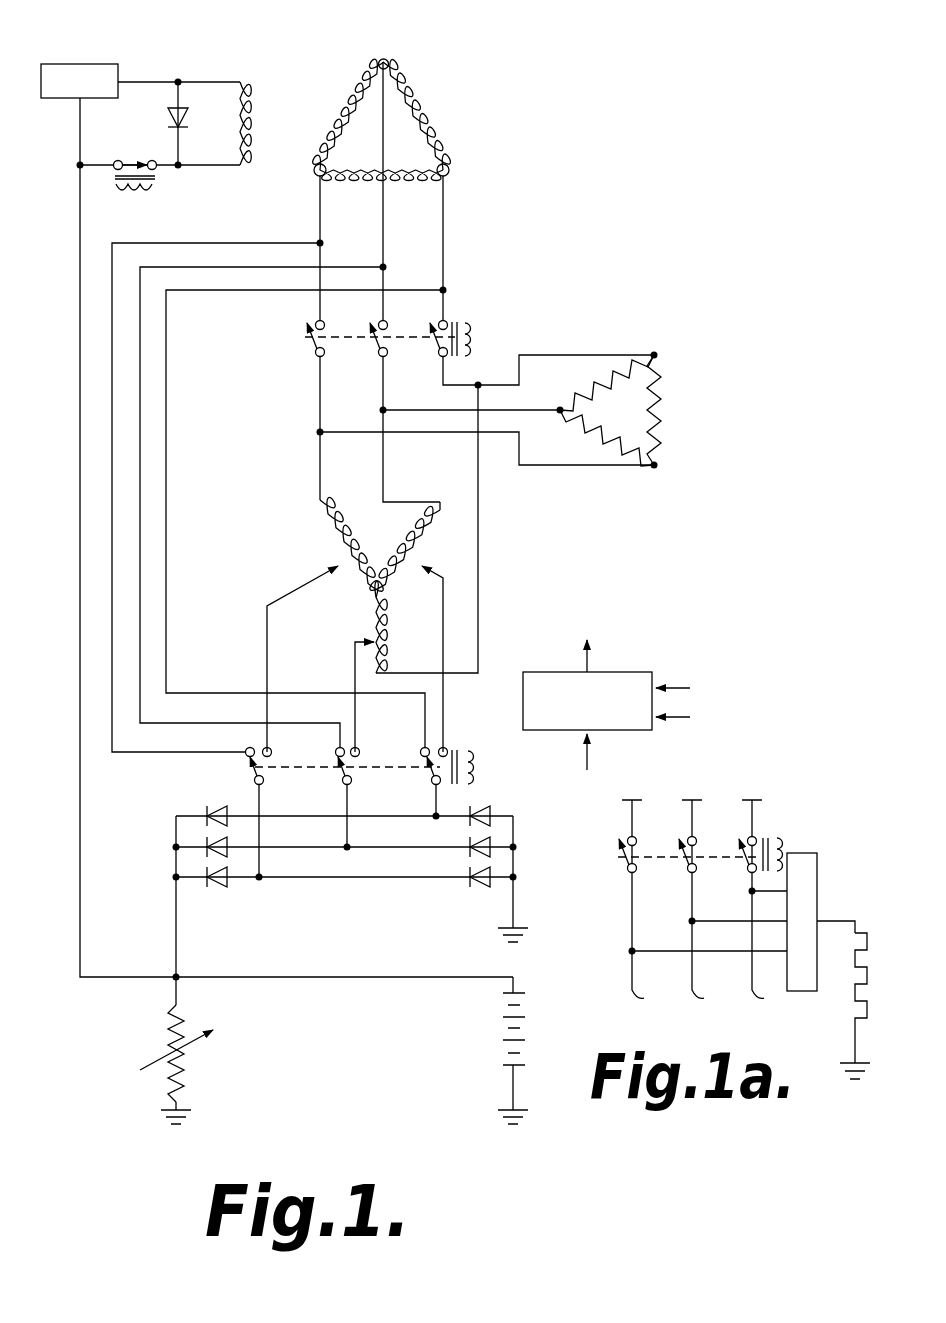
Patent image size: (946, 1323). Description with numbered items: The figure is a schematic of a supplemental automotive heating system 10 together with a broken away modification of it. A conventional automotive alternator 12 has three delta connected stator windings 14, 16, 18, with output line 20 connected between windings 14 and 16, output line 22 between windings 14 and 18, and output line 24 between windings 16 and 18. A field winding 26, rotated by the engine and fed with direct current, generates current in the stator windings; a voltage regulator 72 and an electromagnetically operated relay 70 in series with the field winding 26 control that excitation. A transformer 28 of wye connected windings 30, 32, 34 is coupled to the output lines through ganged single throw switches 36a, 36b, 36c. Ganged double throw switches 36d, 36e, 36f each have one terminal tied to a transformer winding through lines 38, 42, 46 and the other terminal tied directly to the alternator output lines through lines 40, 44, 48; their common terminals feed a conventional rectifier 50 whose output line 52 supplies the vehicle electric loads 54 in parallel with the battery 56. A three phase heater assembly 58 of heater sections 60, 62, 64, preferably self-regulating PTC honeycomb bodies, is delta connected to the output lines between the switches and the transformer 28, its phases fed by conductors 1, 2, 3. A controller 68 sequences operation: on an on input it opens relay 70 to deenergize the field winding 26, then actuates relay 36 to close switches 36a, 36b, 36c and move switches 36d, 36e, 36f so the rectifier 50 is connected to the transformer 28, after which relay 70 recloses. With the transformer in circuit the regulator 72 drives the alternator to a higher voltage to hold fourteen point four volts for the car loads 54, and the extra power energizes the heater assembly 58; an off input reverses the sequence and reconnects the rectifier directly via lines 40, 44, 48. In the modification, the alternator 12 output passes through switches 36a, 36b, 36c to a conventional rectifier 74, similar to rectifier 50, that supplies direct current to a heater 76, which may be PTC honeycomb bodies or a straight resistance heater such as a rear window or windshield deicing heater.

In FIG. 1, the heating system 10 is at (498, 55).
In FIG. 1, the automotive alternator 12 is at (465, 137).
In FIG. 1, the stator winding 14 is at (444, 158).
In FIG. 1, the stator winding 16 is at (390, 178).
In FIG. 1, the stator winding 18 is at (334, 128).
In FIG. 1, the output line 20 is at (443, 273).
In FIG. 1a, the output line 20 is at (756, 822).
In FIG. 1, the output line 22 is at (385, 271).
In FIG. 1a, the output line 22 is at (696, 816).
In FIG. 1, the output line 24 is at (321, 250).
In FIG. 1a, the output line 24 is at (636, 815).
In FIG. 1, the field winding 26 is at (247, 128).
In FIG. 1, the transformer 28 is at (500, 585).
In FIG. 1, the transformer winding 30 is at (375, 639).
In FIG. 1, the transformer winding 32 is at (406, 588).
In FIG. 1, the transformer winding 34 is at (336, 557).
In FIG. 1, the relay 36 is at (358, 569).
In FIG. 1a, the relay 36 is at (706, 866).
In FIG. 1, the single throw switch 36a is at (436, 337).
In FIG. 1a, the single throw switch 36a is at (745, 857).
In FIG. 1, the single throw switch 36b is at (376, 337).
In FIG. 1a, the single throw switch 36b is at (685, 857).
In FIG. 1, the single throw switch 36c is at (313, 337).
In FIG. 1a, the single throw switch 36c is at (625, 857).
In FIG. 1, the double throw switch 36d is at (342, 768).
In FIG. 1, the double throw switch 36e is at (432, 768).
In FIG. 1, the double throw switch 36f is at (252, 768).
In FIG. 1, the line 38 is at (355, 656).
In FIG. 1, the line 40 is at (150, 590).
In FIG. 1, the line 42 is at (446, 730).
In FIG. 1, the line 44 is at (168, 550).
In FIG. 1, the line 46 is at (267, 640).
In FIG. 1, the line 48 is at (113, 758).
In FIG. 1, the rectifier 50 is at (437, 884).
In FIG. 1, the output line 52 is at (180, 956).
In FIG. 1, the vehicle electric loads 54 is at (190, 1083).
In FIG. 1, the battery 56 is at (505, 1064).
In FIG. 1, the three phase heater assembly 58 is at (605, 396).
In FIG. 1, the heater section 60 is at (590, 392).
In FIG. 1, the heater section 62 is at (668, 418).
In FIG. 1, the heater section 64 is at (592, 436).
In FIG. 1, the controller 68 is at (694, 689).
In FIG. 1, the relay 70 is at (142, 146).
In FIG. 1, the voltage regulator 72 is at (62, 100).
In FIG. 1a, the rectifier 74 is at (820, 916).
In FIG. 1a, the heater 76 is at (868, 1014).
In FIG. 1, the conductor 1 is at (605, 341).
In FIG. 1, the conductor 2 is at (592, 470).
In FIG. 1, the conductor 3 is at (503, 412).